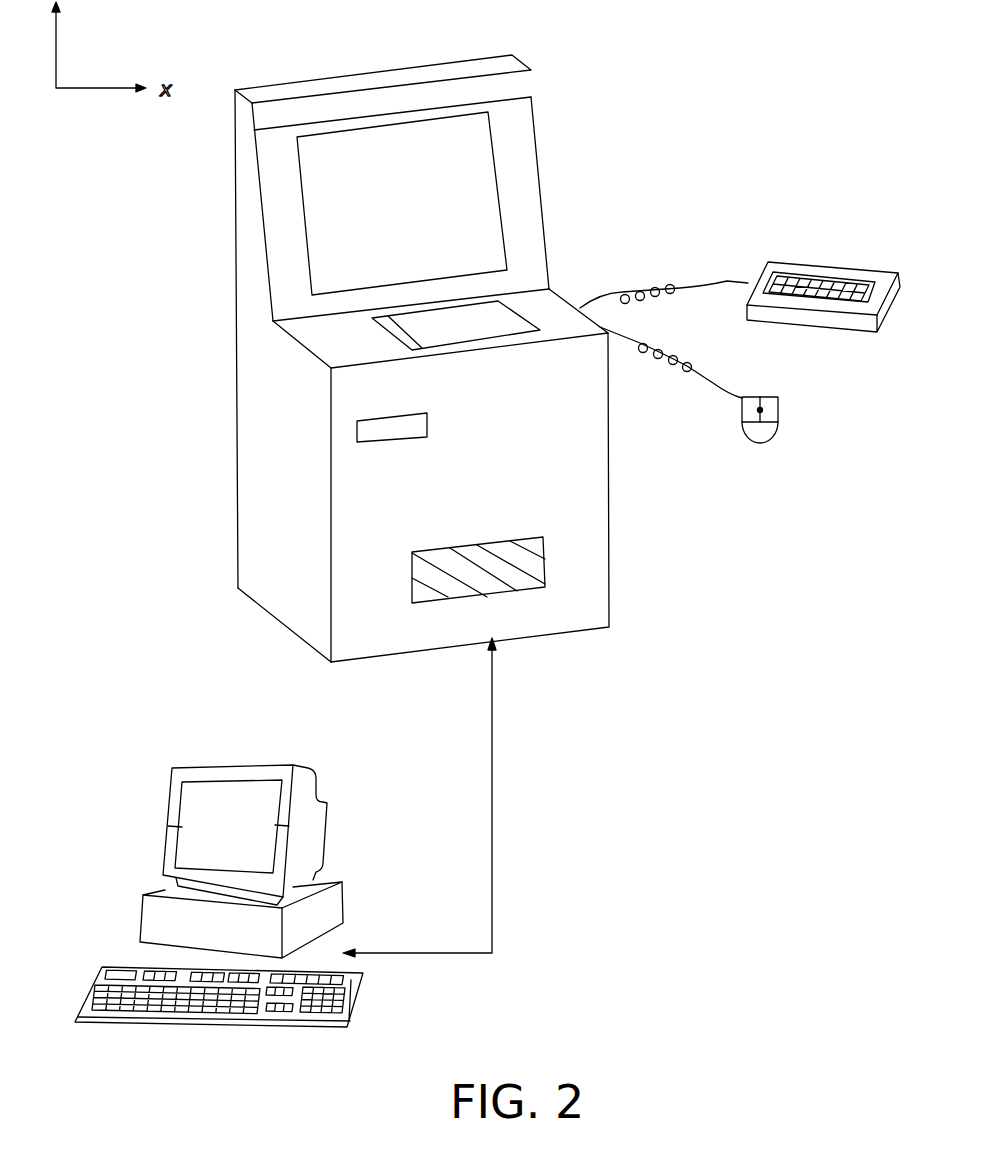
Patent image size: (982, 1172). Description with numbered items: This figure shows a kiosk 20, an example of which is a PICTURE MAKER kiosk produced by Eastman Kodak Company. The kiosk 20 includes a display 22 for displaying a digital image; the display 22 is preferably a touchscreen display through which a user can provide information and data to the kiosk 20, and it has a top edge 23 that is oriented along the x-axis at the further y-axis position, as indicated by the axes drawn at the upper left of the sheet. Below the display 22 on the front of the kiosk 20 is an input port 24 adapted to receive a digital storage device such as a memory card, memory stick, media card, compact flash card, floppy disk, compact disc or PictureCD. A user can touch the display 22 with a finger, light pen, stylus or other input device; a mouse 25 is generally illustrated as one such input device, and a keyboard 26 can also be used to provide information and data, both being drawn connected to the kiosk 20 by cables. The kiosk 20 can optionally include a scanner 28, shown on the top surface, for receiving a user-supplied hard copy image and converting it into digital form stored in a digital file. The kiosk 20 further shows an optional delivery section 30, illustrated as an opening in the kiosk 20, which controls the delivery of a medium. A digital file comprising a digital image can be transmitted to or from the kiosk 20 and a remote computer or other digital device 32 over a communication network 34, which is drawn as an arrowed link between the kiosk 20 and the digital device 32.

The kiosk 20 is at (242, 137).
The display 22 is at (475, 167).
The top edge 23 is at (303, 193).
The input port 24 is at (427, 423).
The mouse 25 is at (778, 423).
The keyboard 26 is at (829, 262).
The scanner 28 is at (497, 332).
The delivery section 30 is at (543, 537).
The digital device 32 is at (143, 905).
The communication network 34 is at (492, 843).